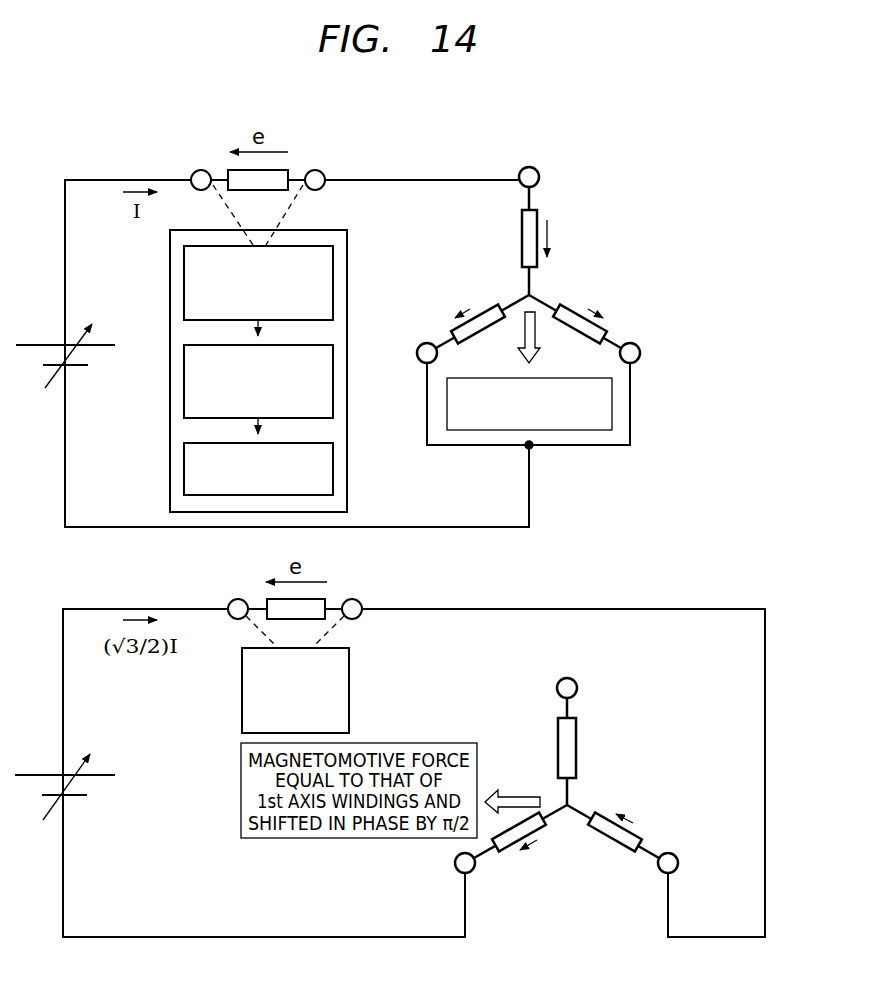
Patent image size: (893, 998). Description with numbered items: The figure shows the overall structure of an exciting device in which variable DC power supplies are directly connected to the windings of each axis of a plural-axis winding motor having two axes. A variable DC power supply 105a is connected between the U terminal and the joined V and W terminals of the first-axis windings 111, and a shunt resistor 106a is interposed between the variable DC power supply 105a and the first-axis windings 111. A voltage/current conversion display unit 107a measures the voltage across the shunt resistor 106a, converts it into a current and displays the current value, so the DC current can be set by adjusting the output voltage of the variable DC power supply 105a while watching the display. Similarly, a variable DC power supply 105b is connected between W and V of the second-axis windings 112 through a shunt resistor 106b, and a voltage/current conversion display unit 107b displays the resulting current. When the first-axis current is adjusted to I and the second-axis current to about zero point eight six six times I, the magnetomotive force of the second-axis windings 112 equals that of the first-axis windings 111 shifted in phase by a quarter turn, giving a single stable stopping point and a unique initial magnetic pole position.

The variable DC power supply 105a is at (75, 366).
The variable DC power supply 105b is at (77, 797).
The shunt resistor 106a is at (297, 165).
The shunt resistor 106b is at (333, 593).
The voltage/current conversion display unit 107a is at (347, 245).
The voltage/current conversion display unit 107b is at (350, 682).
The first-axis windings 111 is at (582, 238).
The second-axis windings 112 is at (602, 732).